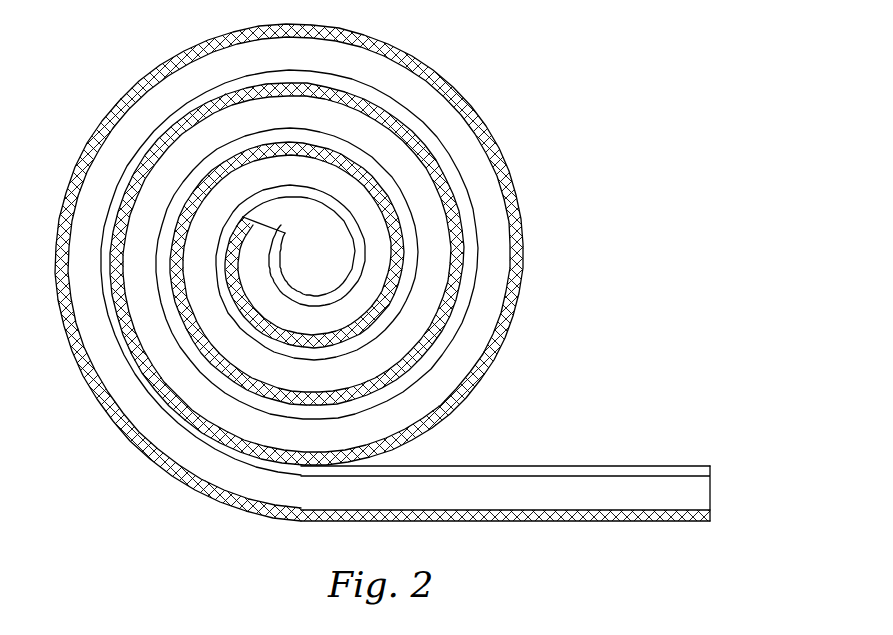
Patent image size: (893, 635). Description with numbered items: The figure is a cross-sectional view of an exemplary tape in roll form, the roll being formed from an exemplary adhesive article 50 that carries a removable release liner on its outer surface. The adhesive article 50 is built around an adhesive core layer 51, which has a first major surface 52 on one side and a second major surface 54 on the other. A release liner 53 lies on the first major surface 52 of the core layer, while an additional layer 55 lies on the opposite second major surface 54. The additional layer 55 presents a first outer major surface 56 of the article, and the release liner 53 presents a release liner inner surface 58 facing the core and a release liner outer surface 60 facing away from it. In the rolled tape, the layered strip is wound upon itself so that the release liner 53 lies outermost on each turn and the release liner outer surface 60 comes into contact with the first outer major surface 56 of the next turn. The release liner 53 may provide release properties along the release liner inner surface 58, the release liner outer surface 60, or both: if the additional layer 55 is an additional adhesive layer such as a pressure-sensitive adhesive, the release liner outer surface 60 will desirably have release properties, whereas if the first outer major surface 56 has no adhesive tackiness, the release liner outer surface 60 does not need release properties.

The adhesive article 50 is at (590, 160).
The adhesive core layer 51 is at (698, 493).
The first major surface 52 is at (563, 510).
The release liner 53 is at (613, 522).
The second major surface 54 is at (603, 478).
The additional layer 55 is at (473, 472).
The first outer major surface 56 is at (537, 465).
The release liner inner surface 58 is at (513, 285).
The release liner outer surface 60 is at (515, 320).